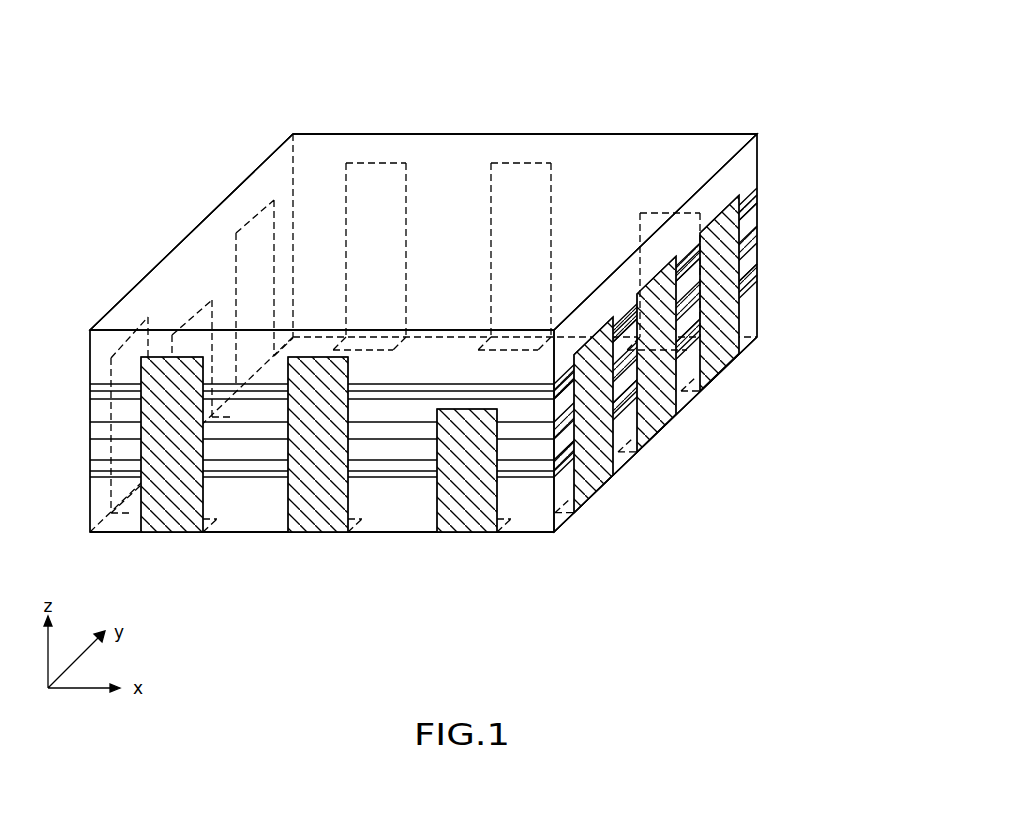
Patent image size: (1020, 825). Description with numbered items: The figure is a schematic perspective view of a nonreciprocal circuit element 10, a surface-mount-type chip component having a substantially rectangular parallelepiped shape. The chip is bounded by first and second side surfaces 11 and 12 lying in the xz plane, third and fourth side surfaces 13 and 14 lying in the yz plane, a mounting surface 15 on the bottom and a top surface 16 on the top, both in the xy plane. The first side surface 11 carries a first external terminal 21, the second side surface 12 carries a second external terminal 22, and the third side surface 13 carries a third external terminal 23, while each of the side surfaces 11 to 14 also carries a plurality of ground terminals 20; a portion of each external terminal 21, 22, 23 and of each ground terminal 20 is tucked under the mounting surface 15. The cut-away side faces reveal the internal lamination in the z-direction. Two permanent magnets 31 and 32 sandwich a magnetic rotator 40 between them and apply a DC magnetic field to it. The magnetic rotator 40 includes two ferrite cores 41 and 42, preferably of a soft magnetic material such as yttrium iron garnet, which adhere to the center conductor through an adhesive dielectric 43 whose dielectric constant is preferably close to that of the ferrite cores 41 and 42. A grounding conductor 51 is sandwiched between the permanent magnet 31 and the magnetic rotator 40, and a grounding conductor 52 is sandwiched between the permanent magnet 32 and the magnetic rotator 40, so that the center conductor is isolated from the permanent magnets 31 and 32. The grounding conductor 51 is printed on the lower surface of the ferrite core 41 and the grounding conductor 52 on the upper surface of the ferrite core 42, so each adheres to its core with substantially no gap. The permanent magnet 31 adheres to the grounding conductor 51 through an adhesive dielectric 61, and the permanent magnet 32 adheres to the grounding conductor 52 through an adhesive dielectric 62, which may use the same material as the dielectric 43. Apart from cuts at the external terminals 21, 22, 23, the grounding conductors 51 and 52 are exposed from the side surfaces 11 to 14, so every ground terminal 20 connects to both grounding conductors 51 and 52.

The nonreciprocal circuit element 10 is at (805, 24).
The first side surface 11 is at (525, 520).
The second side surface 12 is at (327, 157).
The third side surface 13 is at (210, 248).
The fourth side surface 14 is at (563, 525).
The mounting surface 15 is at (399, 507).
The top surface 16 is at (607, 150).
The ground terminals 20 is at (522, 162).
The first external terminal 21 is at (463, 527).
The second external terminal 22 is at (660, 213).
The third external terminal 23 is at (195, 305).
The permanent magnet 31 is at (754, 312).
The permanent magnet 32 is at (752, 165).
The magnetic rotator 40 is at (837, 195).
The ferrite core 41 is at (753, 258).
The ferrite core 42 is at (753, 221).
The dielectric 43 is at (753, 240).
The grounding conductor 51 is at (754, 274).
The grounding conductor 52 is at (753, 204).
The dielectric 61 is at (755, 283).
The dielectric 62 is at (753, 196).